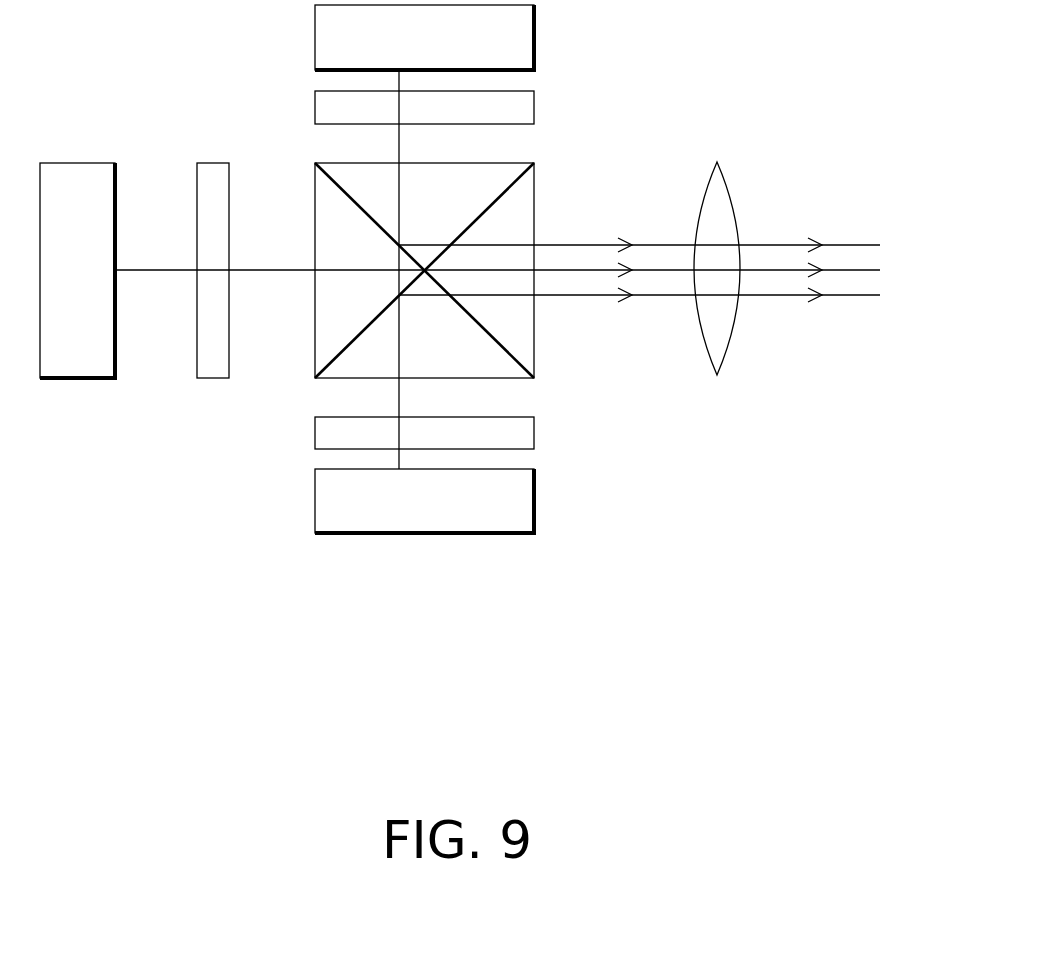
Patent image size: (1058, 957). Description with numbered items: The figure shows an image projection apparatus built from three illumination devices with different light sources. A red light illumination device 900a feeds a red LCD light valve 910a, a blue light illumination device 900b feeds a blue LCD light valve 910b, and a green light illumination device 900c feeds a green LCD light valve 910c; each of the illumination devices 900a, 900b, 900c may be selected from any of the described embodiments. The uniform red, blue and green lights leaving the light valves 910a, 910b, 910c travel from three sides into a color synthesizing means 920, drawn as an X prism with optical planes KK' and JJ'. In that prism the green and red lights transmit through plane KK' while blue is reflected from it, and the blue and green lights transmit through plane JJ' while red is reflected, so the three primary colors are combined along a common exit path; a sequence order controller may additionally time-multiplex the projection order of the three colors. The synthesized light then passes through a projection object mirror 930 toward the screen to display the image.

The red light illumination device 900a is at (82, 163).
The red LCD light valve 910a is at (213, 163).
The blue light illumination device 900b is at (534, 48).
The blue LCD light valve 910b is at (534, 108).
The green light illumination device 900c is at (315, 503).
The green LCD light valve 910c is at (315, 431).
The color synthesizing means 920 is at (534, 335).
The projection object mirror 930 is at (718, 205).